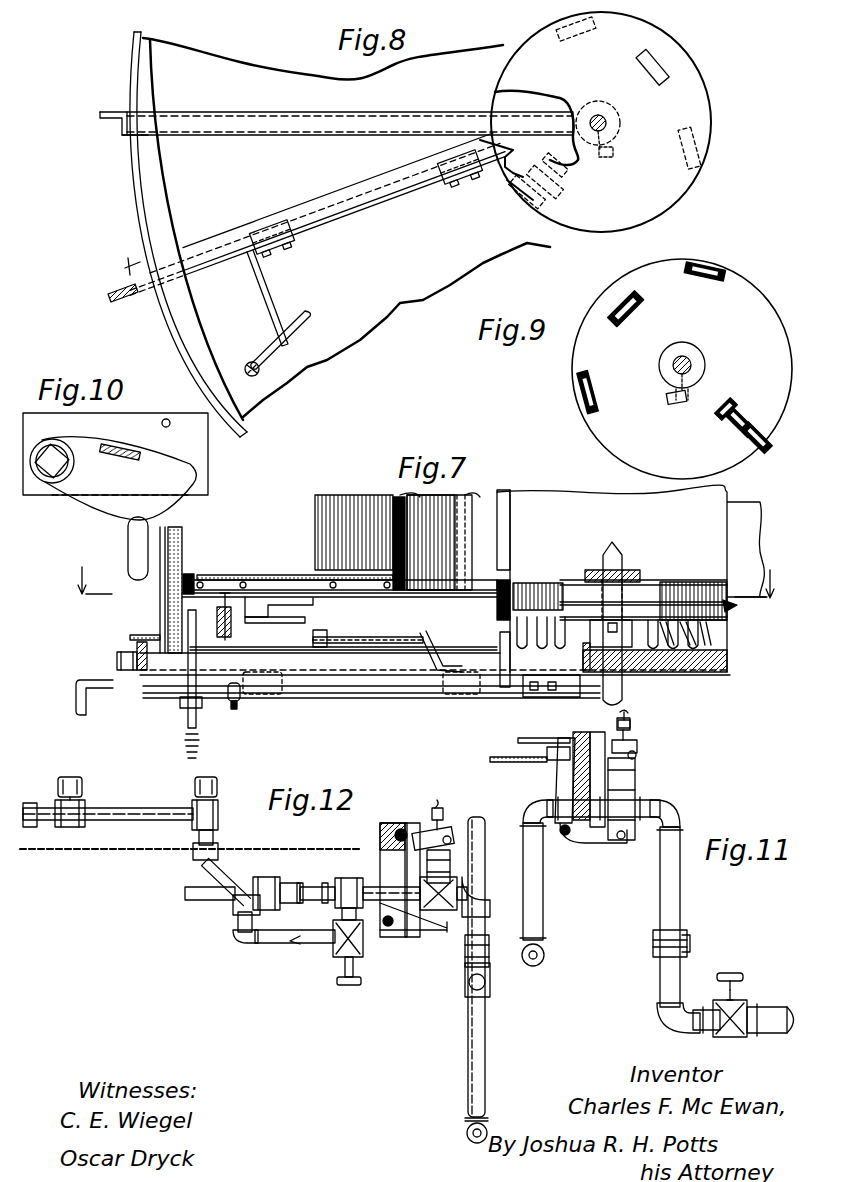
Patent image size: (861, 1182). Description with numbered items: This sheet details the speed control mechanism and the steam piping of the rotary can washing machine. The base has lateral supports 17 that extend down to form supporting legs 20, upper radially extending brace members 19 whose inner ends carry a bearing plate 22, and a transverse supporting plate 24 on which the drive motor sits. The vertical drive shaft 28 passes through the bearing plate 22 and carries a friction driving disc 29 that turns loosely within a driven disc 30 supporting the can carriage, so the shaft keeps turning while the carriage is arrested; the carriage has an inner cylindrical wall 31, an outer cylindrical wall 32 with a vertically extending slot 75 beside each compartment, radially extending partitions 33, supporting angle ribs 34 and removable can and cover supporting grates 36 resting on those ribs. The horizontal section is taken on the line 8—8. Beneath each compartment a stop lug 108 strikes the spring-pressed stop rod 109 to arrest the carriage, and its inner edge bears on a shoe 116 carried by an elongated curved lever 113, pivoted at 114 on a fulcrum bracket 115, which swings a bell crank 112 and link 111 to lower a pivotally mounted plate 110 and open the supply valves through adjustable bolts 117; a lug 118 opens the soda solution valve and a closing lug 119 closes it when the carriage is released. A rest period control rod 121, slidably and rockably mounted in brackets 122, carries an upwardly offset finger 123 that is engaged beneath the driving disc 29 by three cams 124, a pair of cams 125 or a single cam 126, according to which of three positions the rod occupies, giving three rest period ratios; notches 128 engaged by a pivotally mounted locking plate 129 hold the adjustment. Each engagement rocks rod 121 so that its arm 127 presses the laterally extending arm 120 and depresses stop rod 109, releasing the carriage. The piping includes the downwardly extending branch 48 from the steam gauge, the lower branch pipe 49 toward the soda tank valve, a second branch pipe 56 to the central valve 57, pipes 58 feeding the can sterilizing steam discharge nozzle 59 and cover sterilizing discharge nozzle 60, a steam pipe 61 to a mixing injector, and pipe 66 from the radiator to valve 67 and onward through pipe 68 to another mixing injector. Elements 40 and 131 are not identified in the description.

In FIG. 7, the section line 8 is at (419, 592).
In FIG. 8, the lateral supports 17 is at (106, 118).
In FIG. 8, the upper radially extending brace members 19 is at (380, 114).
In FIG. 7, the upper radially extending brace members 19 is at (570, 698).
In FIG. 8, the supporting legs 20 is at (122, 136).
In FIG. 7, the bearing plate 22 is at (722, 670).
In FIG. 8, the transverse supporting plate 24 is at (388, 305).
In FIG. 8, the drive shaft 28 is at (606, 125).
In FIG. 9, the drive shaft 28 is at (692, 358).
In FIG. 7, the drive shaft 28 is at (600, 560).
In FIG. 8, the friction driving disc 29 is at (657, 42).
In FIG. 9, the friction driving disc 29 is at (748, 310).
In FIG. 7, the friction driving disc 29 is at (663, 630).
In FIG. 7, the driven disc 30 is at (652, 584).
In FIG. 7, the inner cylindrical wall 31 is at (503, 492).
In FIG. 7, the second cylindrical wall 32 is at (410, 498).
In FIG. 7, the radially extending partitions 33 is at (320, 498).
In FIG. 7, the supporting angle ribs 34 is at (228, 592).
In FIG. 7, the can and cover supporting grate 36 is at (268, 576).
In FIG. 7, the wall 40 is at (160, 600).
In FIG. 12, the downwardly extending branch 48 is at (487, 866).
In FIG. 12, the lower branch pipe 49 is at (466, 1133).
In FIG. 12, the second branch pipe 56 is at (489, 922).
In FIG. 12, the central valve 57 is at (440, 912).
In FIG. 12, the pipes 58 is at (222, 886).
In FIG. 12, the can sterilizing steam discharge nozzle 59 is at (220, 783).
In FIG. 12, the cover sterilizing discharge nozzle 60 is at (65, 777).
In FIG. 12, the steam pipe 61 is at (195, 898).
In FIG. 11, the pipe 66 is at (681, 900).
In FIG. 11, the valve 67 is at (612, 838).
In FIG. 11, the pipe 68 is at (543, 900).
In FIG. 7, the vertically extending slot 75 is at (400, 497).
In FIG. 7, the stop lug 108 is at (192, 573).
In FIG. 8, the stop rod 109 is at (259, 369).
In FIG. 12, the pivotally mounted plate 110 is at (450, 832).
In FIG. 11, the pivotally mounted plate 110 is at (640, 748).
In FIG. 12, the link 111 is at (452, 860).
In FIG. 11, the link 111 is at (636, 770).
In FIG. 12, the bell crank 112 is at (382, 870).
In FIG. 11, the bell crank 112 is at (560, 790).
In FIG. 7, the elongated curved lever 113 is at (383, 637).
In FIG. 11, the elongated curved lever 113 is at (520, 740).
In FIG. 7, the pivot 114 is at (318, 634).
In FIG. 7, the fulcrum bracket 115 is at (424, 633).
In FIG. 7, the shoe 116 is at (232, 625).
In FIG. 7, the adjustable bolts 117 is at (632, 723).
In FIG. 12, the adjustable bolts 117 is at (434, 806).
In FIG. 11, the adjustable bolts 117 is at (630, 720).
In FIG. 7, the lug 118 is at (315, 620).
In FIG. 7, the closing lug 119 is at (258, 608).
In FIG. 8, the laterally extending arm 120 is at (309, 313).
In FIG. 7, the laterally extending arm 120 is at (240, 696).
In FIG. 8, the rest period control rod 121 is at (373, 212).
In FIG. 7, the rest period control rod 121 is at (130, 553).
In FIG. 8, the brackets 122 is at (293, 242).
In FIG. 7, the brackets 122 is at (295, 692).
In FIG. 8, the upwardly offset finger 123 is at (509, 158).
In FIG. 7, the upwardly offset finger 123 is at (505, 690).
In FIG. 8, the cams 124 is at (582, 22).
In FIG. 9, the cams 124 is at (705, 265).
In FIG. 7, the cams 124 is at (648, 636).
In FIG. 8, the cams 125 is at (672, 68).
In FIG. 9, the cams 125 is at (622, 298).
In FIG. 7, the cams 125 is at (662, 630).
In FIG. 8, the cam 126 is at (572, 172).
In FIG. 9, the cam 126 is at (730, 400).
In FIG. 7, the cam 126 is at (565, 596).
In FIG. 8, the arm 127 is at (268, 298).
In FIG. 7, the arm 127 is at (232, 716).
In FIG. 8, the notches 128 is at (118, 294).
In FIG. 7, the notches 128 is at (118, 660).
In FIG. 8, the pivotally mounted plate 129 is at (130, 268).
In FIG. 10, the pivotally mounted plate 129 is at (105, 505).
In FIG. 7, the pivotally mounted plate 129 is at (130, 637).
In FIG. 7, the hook 131 is at (100, 690).